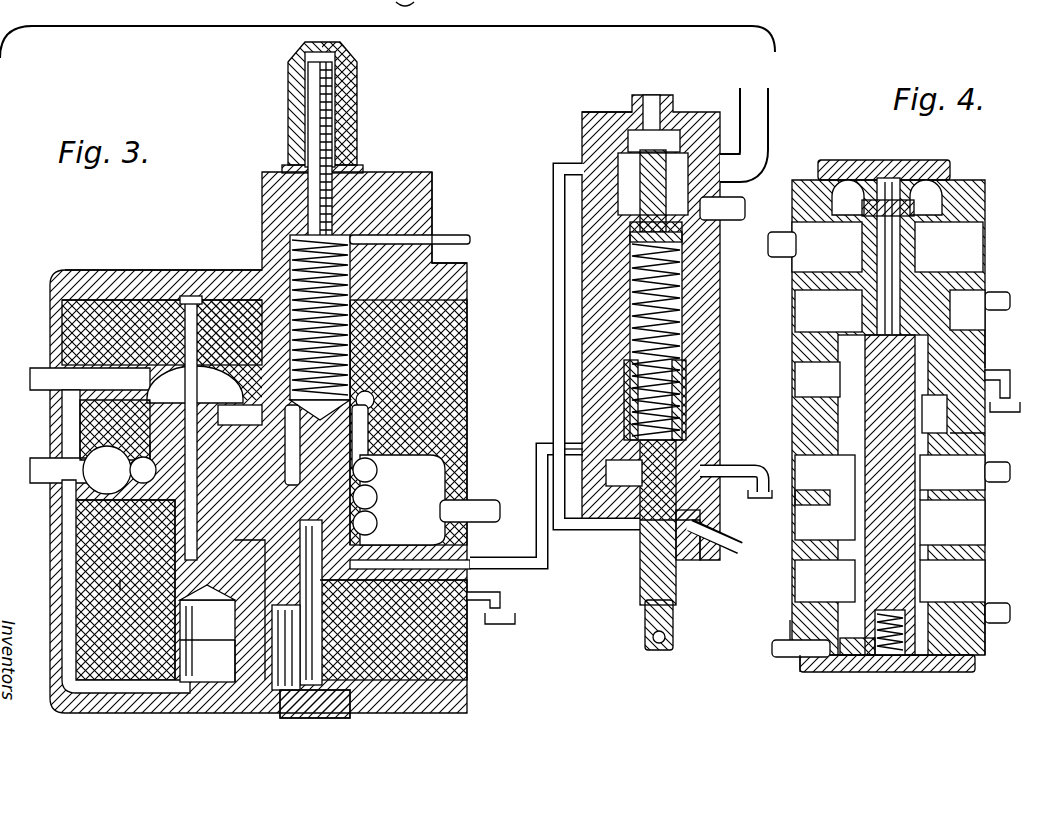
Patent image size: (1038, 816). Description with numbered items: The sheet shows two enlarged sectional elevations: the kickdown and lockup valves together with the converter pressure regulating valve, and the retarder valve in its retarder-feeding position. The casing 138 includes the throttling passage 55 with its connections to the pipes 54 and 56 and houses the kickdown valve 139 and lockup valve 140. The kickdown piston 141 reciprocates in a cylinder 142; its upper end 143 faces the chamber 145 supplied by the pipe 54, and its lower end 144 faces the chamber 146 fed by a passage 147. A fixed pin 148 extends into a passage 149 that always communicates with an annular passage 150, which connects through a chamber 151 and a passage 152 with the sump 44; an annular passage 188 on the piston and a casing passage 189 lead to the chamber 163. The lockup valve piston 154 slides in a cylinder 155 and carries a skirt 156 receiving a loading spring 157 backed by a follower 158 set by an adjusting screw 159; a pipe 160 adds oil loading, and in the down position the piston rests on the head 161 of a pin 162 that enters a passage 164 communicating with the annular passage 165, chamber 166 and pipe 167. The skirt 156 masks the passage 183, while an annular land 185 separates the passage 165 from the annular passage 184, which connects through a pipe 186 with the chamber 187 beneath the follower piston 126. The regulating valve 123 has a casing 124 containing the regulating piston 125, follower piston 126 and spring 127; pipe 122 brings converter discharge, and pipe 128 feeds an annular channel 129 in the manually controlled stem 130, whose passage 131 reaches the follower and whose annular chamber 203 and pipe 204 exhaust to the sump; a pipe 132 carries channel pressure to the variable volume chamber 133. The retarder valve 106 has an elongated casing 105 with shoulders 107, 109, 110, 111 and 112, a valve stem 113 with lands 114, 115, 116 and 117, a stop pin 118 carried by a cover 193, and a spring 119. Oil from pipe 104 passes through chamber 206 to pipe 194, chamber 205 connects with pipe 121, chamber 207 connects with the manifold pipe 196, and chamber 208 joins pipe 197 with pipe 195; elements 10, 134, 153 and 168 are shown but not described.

In FIG. 4, the passage 10 is at (975, 548).
In FIG. 3, the sump 44 is at (505, 624).
In FIG. 4, the sump 44 is at (995, 412).
In FIG. 3, the pipe 54 is at (38, 368).
In FIG. 3, the throttling passage 55 is at (60, 420).
In FIG. 3, the pipe 56 is at (35, 484).
In FIG. 4, the pipe 104 is at (790, 545).
In FIG. 4, the casing 105 is at (815, 672).
In FIG. 4, the retarder valve 106 is at (768, 622).
In FIG. 4, the annular shoulder 107 is at (960, 620).
In FIG. 4, the annular shoulder 109 is at (975, 498).
In FIG. 4, the annular shoulder 110 is at (975, 450).
In FIG. 4, the annular shoulder 111 is at (975, 355).
In FIG. 4, the annular shoulder 112 is at (978, 300).
In FIG. 4, the valve stem 113 is at (890, 490).
In FIG. 4, the annular land 114 is at (820, 645).
In FIG. 4, the annular land 115 is at (838, 570).
In FIG. 4, the annular land 116 is at (830, 430).
In FIG. 4, the annular land 117 is at (845, 330).
In FIG. 4, the stop pin 118 is at (900, 248).
In FIG. 4, the spring 119 is at (888, 655).
In FIG. 4, the pipe 121 is at (980, 600).
In FIG. 3, the pipe 122 is at (768, 118).
In FIG. 3, the regulating valve 123 is at (596, 85).
In FIG. 3, the casing 124 is at (590, 112).
In FIG. 3, the regulating piston 125 is at (632, 230).
In FIG. 3, the follower piston 126 is at (632, 390).
In FIG. 3, the spring 127 is at (638, 302).
In FIG. 3, the pipe 128 is at (553, 165).
In FIG. 3, the annular channel 129 is at (692, 552).
In FIG. 3, the manually controlled stem 130 is at (640, 590).
In FIG. 3, the passage 131 is at (606, 478).
In FIG. 3, the pipe 132 is at (718, 540).
In FIG. 4, the pipe 132 is at (790, 666).
In FIG. 4, the variable volume chamber 133 is at (835, 672).
In FIG. 3, the outlet pipe 134 is at (740, 195).
In FIG. 3, the casing 138 is at (118, 270).
In FIG. 3, the kickdown valve 139 is at (120, 585).
In FIG. 3, the lockup valve 140 is at (380, 398).
In FIG. 3, the kickdown piston 141 is at (210, 588).
In FIG. 3, the cylinder 142 is at (150, 440).
In FIG. 3, the upper end 143 is at (280, 370).
In FIG. 3, the lower end 144 is at (175, 627).
In FIG. 3, the chamber 145 is at (290, 330).
In FIG. 3, the chamber 146 is at (211, 661).
In FIG. 3, the passage 147 is at (115, 713).
In FIG. 3, the fixed pin 148 is at (185, 322).
In FIG. 3, the passage 149 is at (148, 519).
In FIG. 3, the annular passage 150 is at (135, 610).
In FIG. 3, the chamber 151 is at (377, 523).
In FIG. 3, the passage 152 is at (500, 600).
In FIG. 3, the seat 153 is at (152, 416).
In FIG. 3, the lockup valve piston 154 is at (375, 402).
In FIG. 3, the cylinder 155 is at (368, 440).
In FIG. 3, the skirt 156 is at (360, 352).
In FIG. 3, the loading spring 157 is at (350, 322).
In FIG. 3, the follower 158 is at (290, 232).
In FIG. 3, the adjusting screw 159 is at (305, 133).
In FIG. 3, the pipe 160 is at (448, 237).
In FIG. 3, the head 161 is at (345, 712).
In FIG. 3, the pin 162 is at (355, 660).
In FIG. 3, the chamber 163 is at (355, 640).
In FIG. 3, the passage 164 is at (377, 474).
In FIG. 3, the annular passage 165 is at (285, 440).
In FIG. 3, the chamber 166 is at (402, 500).
In FIG. 3, the pipe 167 is at (477, 509).
In FIG. 3, the plug 168 is at (288, 700).
In FIG. 3, the passage 183 is at (240, 414).
In FIG. 3, the annular passage 184 is at (352, 556).
In FIG. 3, the annular land 185 is at (377, 498).
In FIG. 3, the pipe 186 is at (546, 566).
In FIG. 3, the chamber 187 is at (574, 440).
In FIG. 3, the annular passage 188 is at (150, 540).
In FIG. 3, the passage 189 is at (260, 660).
In FIG. 4, the cover 193 is at (945, 165).
In FIG. 4, the pipe 194 is at (985, 470).
In FIG. 4, the pipe 195 is at (990, 310).
In FIG. 4, the manifold pipe 196 is at (1012, 372).
In FIG. 4, the pipe 197 is at (790, 232).
In FIG. 3, the annular chamber 203 is at (722, 458).
In FIG. 3, the pipe 204 is at (750, 466).
In FIG. 4, the chamber 205 is at (952, 581).
In FIG. 4, the chamber 206 is at (952, 522).
In FIG. 4, the chamber 207 is at (937, 414).
In FIG. 4, the chamber 208 is at (902, 252).